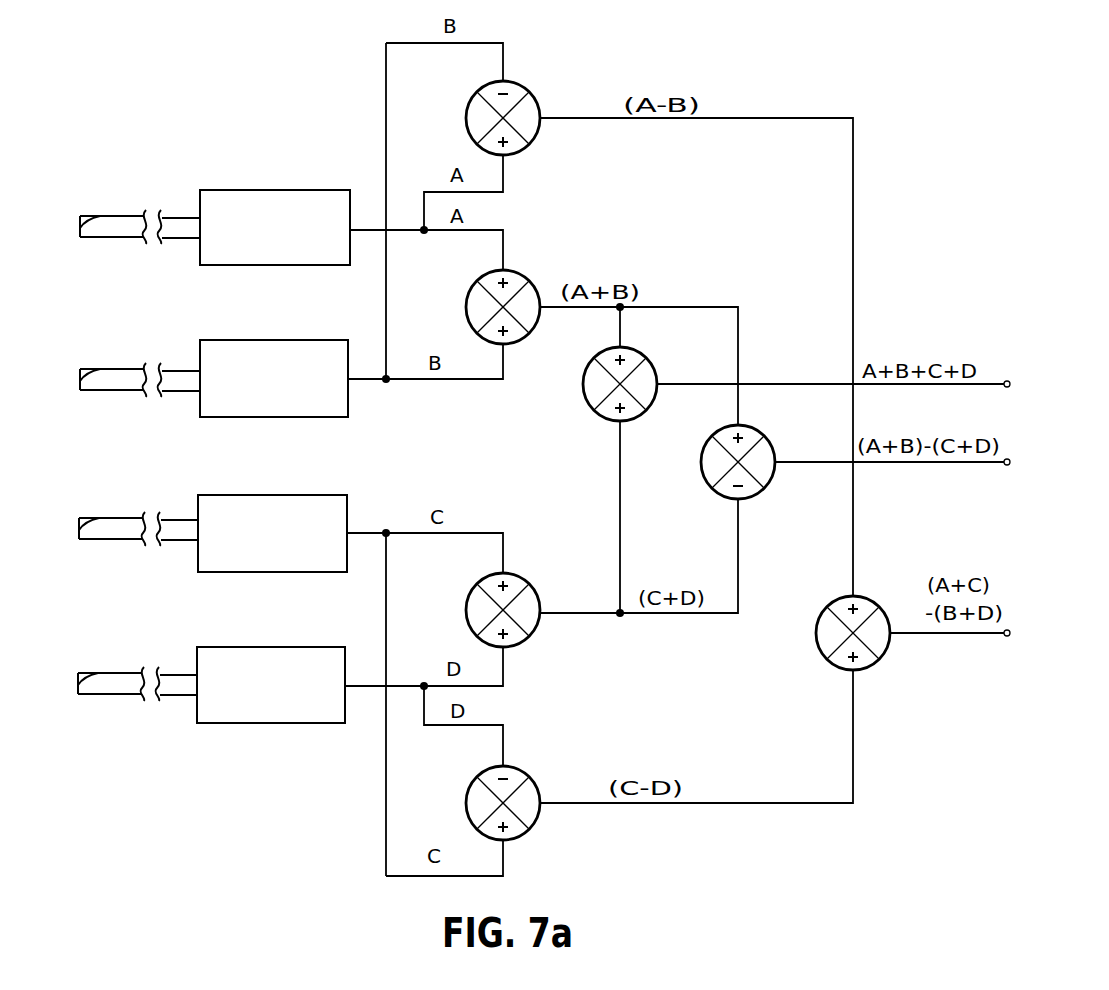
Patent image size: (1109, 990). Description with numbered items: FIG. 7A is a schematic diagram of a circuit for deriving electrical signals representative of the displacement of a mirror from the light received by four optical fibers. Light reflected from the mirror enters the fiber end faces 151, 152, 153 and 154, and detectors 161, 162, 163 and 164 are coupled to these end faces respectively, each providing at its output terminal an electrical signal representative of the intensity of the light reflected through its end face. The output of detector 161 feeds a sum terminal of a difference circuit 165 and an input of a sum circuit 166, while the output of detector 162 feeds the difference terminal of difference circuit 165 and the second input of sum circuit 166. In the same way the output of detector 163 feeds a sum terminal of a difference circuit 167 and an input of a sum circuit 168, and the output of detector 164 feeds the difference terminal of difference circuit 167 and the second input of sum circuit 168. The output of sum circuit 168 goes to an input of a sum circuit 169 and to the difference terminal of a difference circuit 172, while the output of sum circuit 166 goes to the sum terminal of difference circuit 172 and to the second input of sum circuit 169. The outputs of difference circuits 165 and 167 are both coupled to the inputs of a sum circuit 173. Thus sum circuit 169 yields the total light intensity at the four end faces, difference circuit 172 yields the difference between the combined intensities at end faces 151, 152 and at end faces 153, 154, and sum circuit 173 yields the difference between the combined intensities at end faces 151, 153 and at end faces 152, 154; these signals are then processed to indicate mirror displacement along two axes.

The end face 151 is at (95, 219).
The end face 152 is at (95, 372).
The end face 153 is at (94, 521).
The end face 154 is at (93, 676).
The detector 161 is at (273, 190).
The detector 162 is at (267, 340).
The detector 163 is at (263, 495).
The detector 164 is at (266, 647).
The difference circuit 165 is at (535, 95).
The sum circuit 166 is at (530, 274).
The difference circuit 167 is at (535, 782).
The sum circuit 168 is at (535, 592).
The sum circuit 169 is at (588, 402).
The difference circuit 172 is at (718, 490).
The sum circuit 173 is at (828, 659).